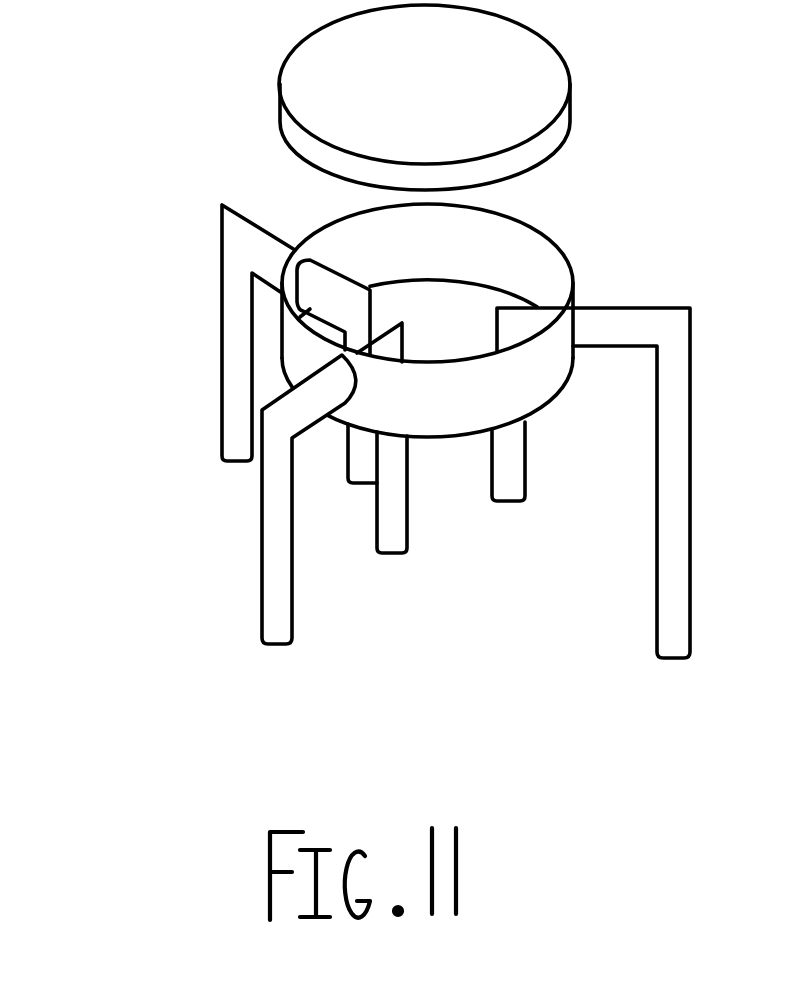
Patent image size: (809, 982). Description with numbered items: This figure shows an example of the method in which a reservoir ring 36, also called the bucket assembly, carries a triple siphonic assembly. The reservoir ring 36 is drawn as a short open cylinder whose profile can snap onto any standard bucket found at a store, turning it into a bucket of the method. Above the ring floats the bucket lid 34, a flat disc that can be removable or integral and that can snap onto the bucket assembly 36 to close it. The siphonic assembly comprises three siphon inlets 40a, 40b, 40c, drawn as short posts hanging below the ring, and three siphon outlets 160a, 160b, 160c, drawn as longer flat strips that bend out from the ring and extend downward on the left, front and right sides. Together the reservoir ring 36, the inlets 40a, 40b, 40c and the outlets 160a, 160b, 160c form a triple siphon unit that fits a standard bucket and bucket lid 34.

The bucket lid 34 is at (424, 97).
The reservoir ring 36 is at (427, 320).
The siphon outlet 160a is at (232, 460).
The siphon outlet 160b is at (274, 647).
The siphon outlet 160c is at (675, 658).
The siphon inlet 40a is at (363, 487).
The siphon inlet 40b is at (388, 555).
The siphon inlet 40c is at (512, 503).